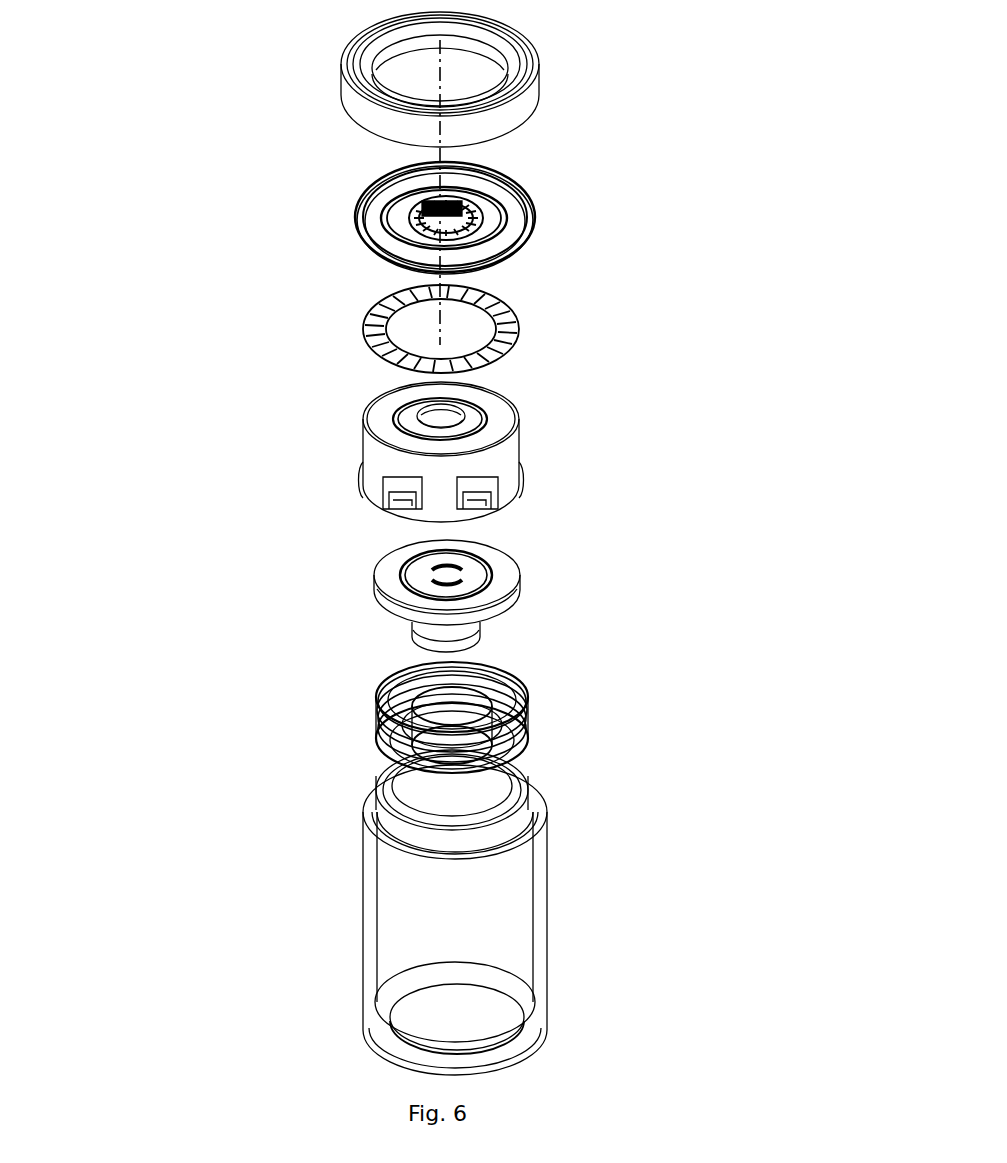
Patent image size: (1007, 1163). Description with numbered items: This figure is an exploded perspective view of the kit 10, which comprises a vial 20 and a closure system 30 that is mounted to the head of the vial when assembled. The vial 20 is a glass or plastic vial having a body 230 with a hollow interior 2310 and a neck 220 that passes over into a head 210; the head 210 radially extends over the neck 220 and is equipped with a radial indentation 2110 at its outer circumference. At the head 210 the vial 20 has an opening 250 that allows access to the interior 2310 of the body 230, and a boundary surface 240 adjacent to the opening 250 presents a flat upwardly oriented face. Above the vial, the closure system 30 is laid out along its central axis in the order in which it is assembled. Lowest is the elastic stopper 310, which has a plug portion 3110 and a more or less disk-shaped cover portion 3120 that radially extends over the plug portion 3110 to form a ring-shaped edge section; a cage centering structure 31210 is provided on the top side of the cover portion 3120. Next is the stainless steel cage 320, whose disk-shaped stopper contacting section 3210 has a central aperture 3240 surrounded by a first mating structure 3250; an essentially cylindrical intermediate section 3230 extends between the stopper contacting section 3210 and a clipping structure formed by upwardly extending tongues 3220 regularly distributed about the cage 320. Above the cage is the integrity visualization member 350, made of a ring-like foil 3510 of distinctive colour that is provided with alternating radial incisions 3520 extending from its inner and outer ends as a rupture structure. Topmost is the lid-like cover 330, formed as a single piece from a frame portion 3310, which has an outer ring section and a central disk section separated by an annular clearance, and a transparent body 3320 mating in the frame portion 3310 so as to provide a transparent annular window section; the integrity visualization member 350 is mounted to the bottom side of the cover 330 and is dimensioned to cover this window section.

The kit 10 is at (313, 820).
The vial 20 is at (320, 930).
The head 210 is at (362, 729).
The neck 220 is at (525, 780).
The body 230 is at (543, 915).
The boundary surface 240 is at (385, 712).
The opening 250 is at (455, 712).
The radial indentation 2110 is at (520, 727).
The interior 2310 is at (507, 935).
The closure system 30 is at (570, 216).
The elastic stopper 310 is at (537, 576).
The plug portion 3110 is at (420, 635).
The cover portion 3120 is at (363, 561).
The cage centering structure 31210 is at (432, 582).
The metal cage 320 is at (545, 447).
The stopper contacting section 3210 is at (490, 412).
The tongues 3220 is at (495, 495).
The intermediate section 3230 is at (370, 472).
The central aperture 3240 is at (455, 408).
The first mating structure 3250 is at (415, 417).
The cover 330 is at (300, 87).
The frame portion 3310 is at (525, 103).
The transparent body 3320 is at (357, 215).
The integrity visualization member 350 is at (352, 328).
The foil 3510 is at (373, 313).
The radial incisions 3520 is at (515, 330).